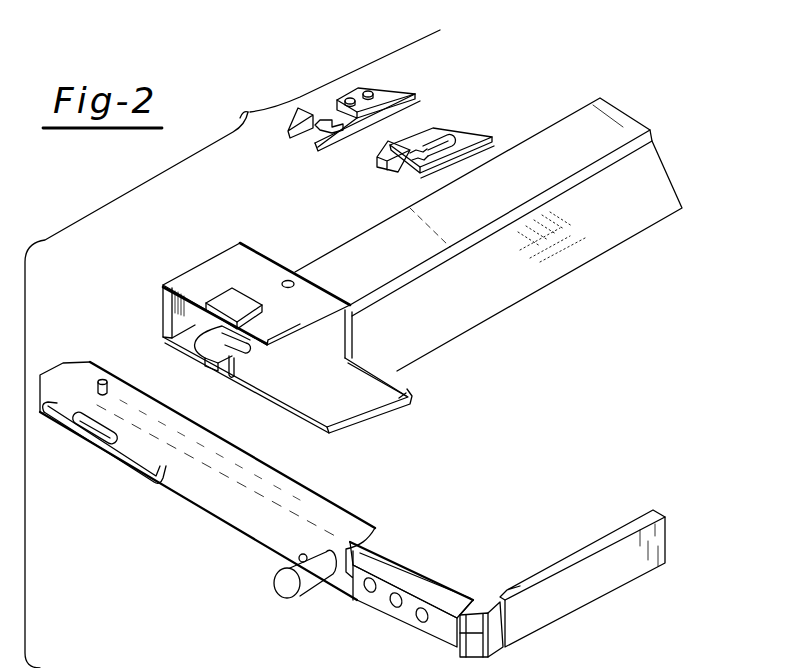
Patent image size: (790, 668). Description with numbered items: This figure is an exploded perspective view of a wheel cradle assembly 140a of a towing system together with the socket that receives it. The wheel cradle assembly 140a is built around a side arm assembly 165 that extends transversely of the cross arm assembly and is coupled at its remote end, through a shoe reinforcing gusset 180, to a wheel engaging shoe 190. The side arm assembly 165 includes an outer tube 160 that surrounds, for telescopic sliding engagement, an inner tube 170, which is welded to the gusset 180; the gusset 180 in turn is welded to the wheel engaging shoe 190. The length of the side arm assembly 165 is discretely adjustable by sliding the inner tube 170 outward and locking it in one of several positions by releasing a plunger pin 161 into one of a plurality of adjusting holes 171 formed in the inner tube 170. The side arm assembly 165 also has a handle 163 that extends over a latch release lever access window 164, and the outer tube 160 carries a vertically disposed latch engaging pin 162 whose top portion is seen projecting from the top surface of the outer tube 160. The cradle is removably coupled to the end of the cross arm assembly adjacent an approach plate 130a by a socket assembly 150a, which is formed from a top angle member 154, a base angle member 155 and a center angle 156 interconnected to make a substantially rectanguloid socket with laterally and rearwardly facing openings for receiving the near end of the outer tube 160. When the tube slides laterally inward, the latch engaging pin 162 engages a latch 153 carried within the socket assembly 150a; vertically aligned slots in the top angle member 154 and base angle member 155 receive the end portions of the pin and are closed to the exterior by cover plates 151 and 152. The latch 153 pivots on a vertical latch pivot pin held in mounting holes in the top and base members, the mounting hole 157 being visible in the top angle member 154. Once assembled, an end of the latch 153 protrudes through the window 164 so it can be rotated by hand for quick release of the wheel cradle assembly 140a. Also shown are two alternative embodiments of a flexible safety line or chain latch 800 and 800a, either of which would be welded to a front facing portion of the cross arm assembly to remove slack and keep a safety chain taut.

The approach plate 130a is at (662, 165).
The socket assembly 150a is at (257, 331).
The top angle member 154 is at (272, 273).
The cover plate 151 is at (243, 285).
The mounting hole 157 is at (294, 282).
The center angle 156 is at (163, 312).
The base angle member 155 is at (340, 410).
The latch 153 is at (200, 358).
The cover plate 152 is at (215, 390).
The wheel cradle assembly 140a is at (350, 489).
The outer tube 160 is at (243, 467).
The plunger pin 161 is at (282, 582).
The latch engaging pin 162 is at (100, 378).
The handle 163 is at (110, 462).
The latch release lever access window 164 is at (103, 448).
The side arm assembly 165 is at (387, 515).
The inner tube 170 is at (408, 584).
The adjusting holes 171 is at (394, 607).
The shoe reinforcing gusset 180 is at (474, 604).
The wheel engaging shoe 190 is at (583, 553).
The safety line latch 800 is at (411, 71).
The safety line latch 800a is at (485, 127).